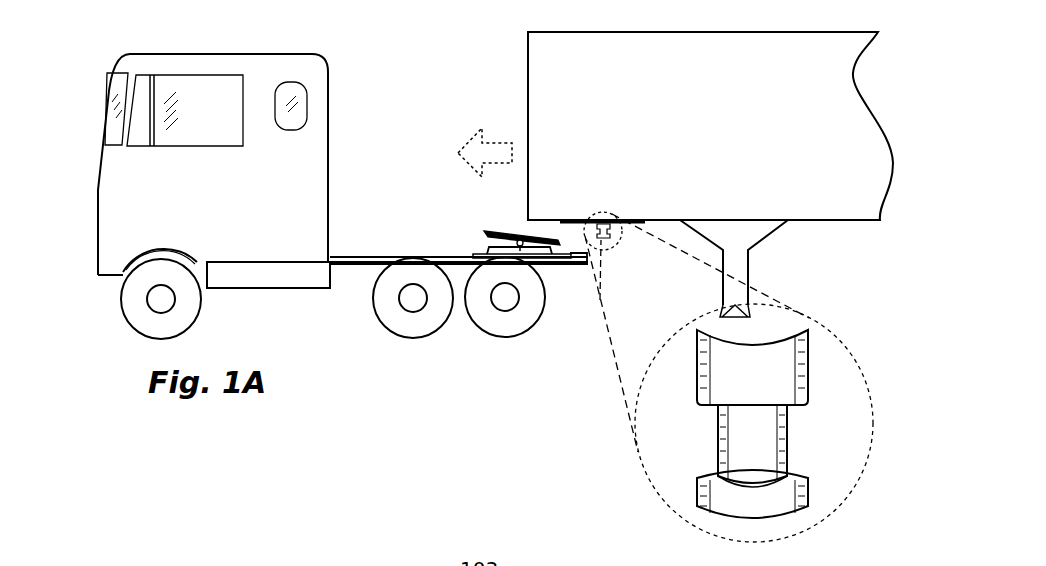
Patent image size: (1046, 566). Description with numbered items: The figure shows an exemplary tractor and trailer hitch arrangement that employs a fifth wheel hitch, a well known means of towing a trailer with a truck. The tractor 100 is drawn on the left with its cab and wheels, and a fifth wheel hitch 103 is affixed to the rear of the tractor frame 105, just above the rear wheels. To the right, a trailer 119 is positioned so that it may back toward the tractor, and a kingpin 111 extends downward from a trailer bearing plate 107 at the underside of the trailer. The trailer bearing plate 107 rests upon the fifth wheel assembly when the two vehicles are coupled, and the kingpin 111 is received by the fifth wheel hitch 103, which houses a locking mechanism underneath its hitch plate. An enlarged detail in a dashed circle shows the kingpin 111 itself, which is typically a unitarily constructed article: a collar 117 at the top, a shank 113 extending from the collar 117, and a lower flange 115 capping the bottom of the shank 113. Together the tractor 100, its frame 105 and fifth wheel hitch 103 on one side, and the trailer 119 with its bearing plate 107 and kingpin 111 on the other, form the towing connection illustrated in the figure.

The tractor 100 is at (348, 70).
The fifth wheel hitch 103 is at (511, 232).
The tractor frame 105 is at (434, 256).
The trailer bearing plate 107 is at (645, 220).
The kingpin 111 is at (600, 300).
The shank 113 is at (735, 457).
The lower flange 115 is at (710, 510).
The collar 117 is at (755, 368).
The trailer 119 is at (528, 72).